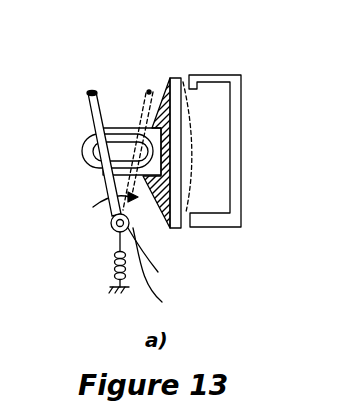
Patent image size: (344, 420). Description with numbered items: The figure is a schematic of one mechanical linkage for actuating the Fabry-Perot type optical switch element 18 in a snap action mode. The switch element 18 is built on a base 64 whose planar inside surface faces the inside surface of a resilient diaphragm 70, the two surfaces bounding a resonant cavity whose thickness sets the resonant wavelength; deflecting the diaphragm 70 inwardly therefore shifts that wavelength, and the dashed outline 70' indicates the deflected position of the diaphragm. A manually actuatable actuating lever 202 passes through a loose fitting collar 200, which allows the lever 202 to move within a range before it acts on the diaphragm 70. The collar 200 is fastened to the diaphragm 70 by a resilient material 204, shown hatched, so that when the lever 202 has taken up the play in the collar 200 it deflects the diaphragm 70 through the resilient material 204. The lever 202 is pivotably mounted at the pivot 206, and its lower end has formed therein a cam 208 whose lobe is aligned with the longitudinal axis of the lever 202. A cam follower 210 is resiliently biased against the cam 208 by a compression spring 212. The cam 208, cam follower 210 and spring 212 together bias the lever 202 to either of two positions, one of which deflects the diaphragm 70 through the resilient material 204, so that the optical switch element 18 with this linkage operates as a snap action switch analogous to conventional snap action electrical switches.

The optical switch element 18 is at (218, 58).
The base 64 is at (243, 196).
The resilient diaphragm 70 is at (152, 134).
The deflected diaphragm position 70' is at (235, 146).
The loose fitting collar 200 is at (88, 170).
The actuating lever 202 is at (88, 95).
The resilient material 204 is at (158, 182).
The pivot 206 is at (164, 257).
The cam 208 is at (168, 272).
The cam follower 210 is at (111, 230).
The compression spring 212 is at (115, 267).